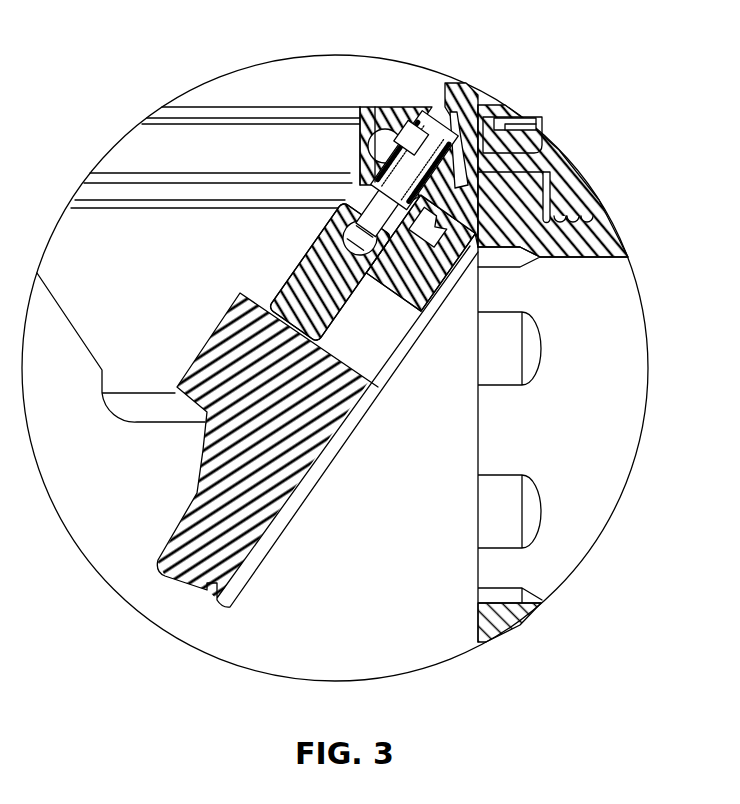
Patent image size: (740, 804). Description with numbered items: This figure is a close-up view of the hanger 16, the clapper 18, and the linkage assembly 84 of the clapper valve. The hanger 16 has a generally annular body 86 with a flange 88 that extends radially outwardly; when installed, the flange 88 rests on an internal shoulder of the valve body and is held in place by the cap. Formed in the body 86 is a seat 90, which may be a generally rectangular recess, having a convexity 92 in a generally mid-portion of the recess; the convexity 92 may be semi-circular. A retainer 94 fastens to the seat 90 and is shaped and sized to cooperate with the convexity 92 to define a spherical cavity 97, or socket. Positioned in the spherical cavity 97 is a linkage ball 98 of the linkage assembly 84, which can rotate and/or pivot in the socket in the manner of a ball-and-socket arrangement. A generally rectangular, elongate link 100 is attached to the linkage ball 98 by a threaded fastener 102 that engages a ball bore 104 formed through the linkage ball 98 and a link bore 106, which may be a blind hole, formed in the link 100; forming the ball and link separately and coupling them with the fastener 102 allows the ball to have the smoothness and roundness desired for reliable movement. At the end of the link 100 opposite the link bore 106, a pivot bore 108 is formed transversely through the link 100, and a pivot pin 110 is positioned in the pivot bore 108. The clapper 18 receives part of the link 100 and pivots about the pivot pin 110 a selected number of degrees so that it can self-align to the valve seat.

The hanger 16 is at (330, 98).
The clapper 18 is at (300, 418).
The linkage assembly 84 is at (357, 186).
The body 86 is at (447, 213).
The flange 88 is at (524, 147).
The seat 90 is at (464, 175).
The convexity 92 is at (450, 190).
The retainer 94 is at (415, 112).
The spherical cavity 97 is at (405, 128).
The linkage ball 98 is at (441, 196).
The link 100 is at (333, 248).
The threaded fastener 102 is at (348, 181).
The ball bore 104 is at (362, 175).
The link bore 106 is at (392, 228).
The pivot bore 108 is at (370, 260).
The pivot pin 110 is at (354, 231).